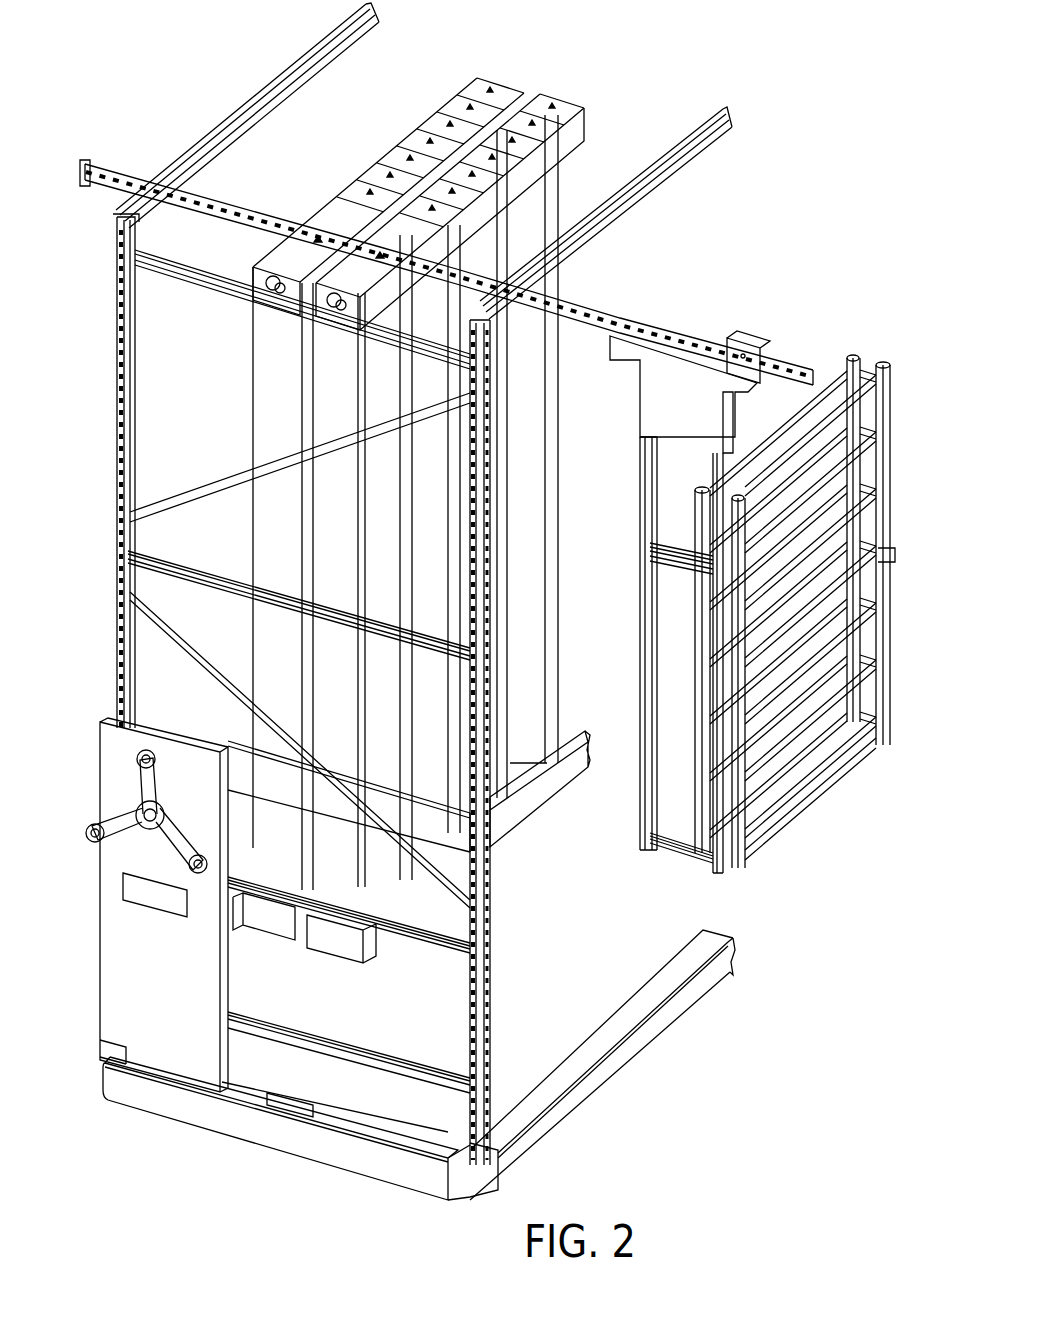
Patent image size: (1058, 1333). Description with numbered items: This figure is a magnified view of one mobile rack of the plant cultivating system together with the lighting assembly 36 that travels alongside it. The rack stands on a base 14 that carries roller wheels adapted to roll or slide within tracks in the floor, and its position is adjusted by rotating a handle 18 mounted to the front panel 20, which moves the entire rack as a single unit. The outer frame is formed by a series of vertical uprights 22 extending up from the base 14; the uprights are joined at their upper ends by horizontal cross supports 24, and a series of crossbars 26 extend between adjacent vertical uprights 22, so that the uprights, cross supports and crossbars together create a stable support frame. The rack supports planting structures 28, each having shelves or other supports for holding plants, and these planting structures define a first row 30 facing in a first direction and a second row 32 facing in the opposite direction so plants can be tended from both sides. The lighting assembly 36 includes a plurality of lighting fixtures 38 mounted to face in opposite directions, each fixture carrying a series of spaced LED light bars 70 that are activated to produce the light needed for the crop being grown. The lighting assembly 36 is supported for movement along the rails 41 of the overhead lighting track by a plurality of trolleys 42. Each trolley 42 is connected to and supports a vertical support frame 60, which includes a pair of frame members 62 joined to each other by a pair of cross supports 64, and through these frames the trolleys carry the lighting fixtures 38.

The base 14 is at (620, 1053).
The handle 18 is at (120, 822).
The front panel 20 is at (118, 986).
The vertical uprights 22 is at (117, 372).
The horizontal cross supports 24 is at (272, 94).
The crossbars 26 is at (203, 576).
The planting structures 28 is at (262, 366).
The first row 30 is at (492, 84).
The second row 32 is at (547, 101).
The lighting assembly 36 is at (777, 590).
The lighting fixtures 38 is at (887, 642).
The rails 41 is at (653, 325).
The trolleys 42 is at (650, 403).
The vertical support frame 60 is at (693, 679).
The frame members 62 is at (642, 632).
The cross supports 64 is at (688, 566).
The LED light bars 70 is at (840, 405).